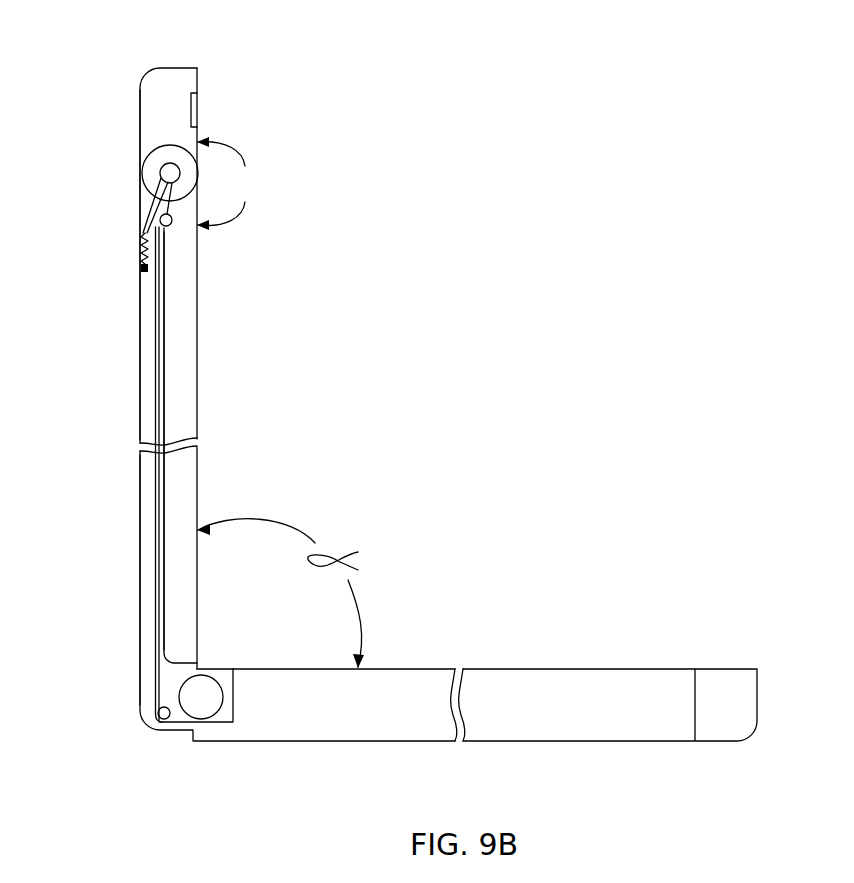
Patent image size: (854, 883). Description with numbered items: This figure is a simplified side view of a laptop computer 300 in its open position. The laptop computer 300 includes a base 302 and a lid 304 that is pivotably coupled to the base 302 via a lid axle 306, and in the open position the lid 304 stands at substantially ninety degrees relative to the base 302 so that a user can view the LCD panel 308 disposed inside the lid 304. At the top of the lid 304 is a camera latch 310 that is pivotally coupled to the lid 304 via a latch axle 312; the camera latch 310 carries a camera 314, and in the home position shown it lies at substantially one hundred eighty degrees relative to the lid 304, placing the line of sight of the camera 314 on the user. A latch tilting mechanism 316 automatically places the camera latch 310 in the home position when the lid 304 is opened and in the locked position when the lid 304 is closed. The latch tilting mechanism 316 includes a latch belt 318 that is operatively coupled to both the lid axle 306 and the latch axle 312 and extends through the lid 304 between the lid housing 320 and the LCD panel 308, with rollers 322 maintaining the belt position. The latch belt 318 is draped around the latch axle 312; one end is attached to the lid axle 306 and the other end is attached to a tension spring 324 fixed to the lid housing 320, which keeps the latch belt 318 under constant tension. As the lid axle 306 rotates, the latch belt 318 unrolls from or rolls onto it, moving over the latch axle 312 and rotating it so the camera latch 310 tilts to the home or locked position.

The laptop computer 300 is at (525, 372).
The base 302 is at (182, 68).
The lid 304 is at (140, 640).
The lid axle 306 is at (201, 705).
The LCD panel 308 is at (187, 355).
The camera latch 310 is at (140, 120).
The latch axle 312 is at (163, 167).
The camera 314 is at (198, 98).
The latch tilting mechanism 316 is at (107, 425).
The latch belt 318 is at (157, 547).
The lid housing 320 is at (140, 335).
The rollers 322 is at (172, 225).
The tension spring 324 is at (141, 248).